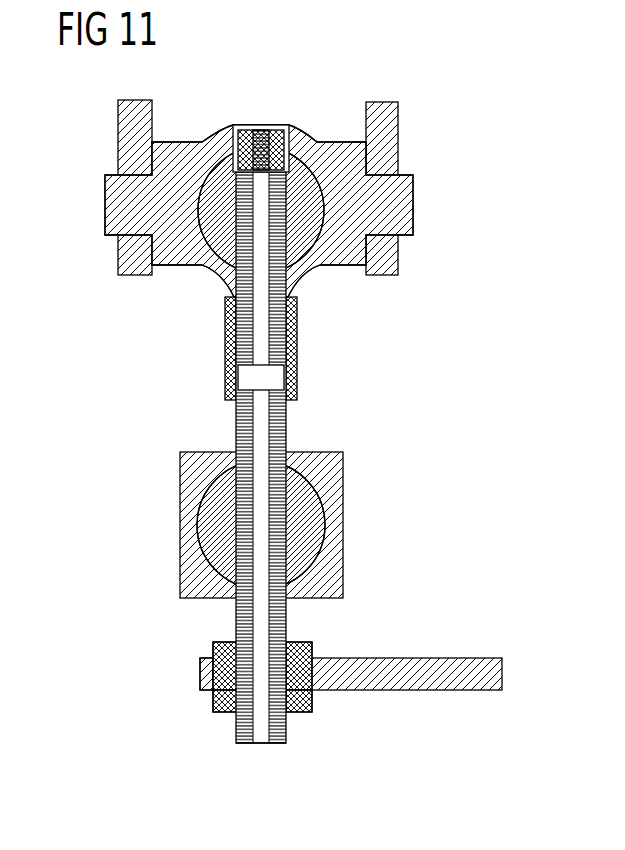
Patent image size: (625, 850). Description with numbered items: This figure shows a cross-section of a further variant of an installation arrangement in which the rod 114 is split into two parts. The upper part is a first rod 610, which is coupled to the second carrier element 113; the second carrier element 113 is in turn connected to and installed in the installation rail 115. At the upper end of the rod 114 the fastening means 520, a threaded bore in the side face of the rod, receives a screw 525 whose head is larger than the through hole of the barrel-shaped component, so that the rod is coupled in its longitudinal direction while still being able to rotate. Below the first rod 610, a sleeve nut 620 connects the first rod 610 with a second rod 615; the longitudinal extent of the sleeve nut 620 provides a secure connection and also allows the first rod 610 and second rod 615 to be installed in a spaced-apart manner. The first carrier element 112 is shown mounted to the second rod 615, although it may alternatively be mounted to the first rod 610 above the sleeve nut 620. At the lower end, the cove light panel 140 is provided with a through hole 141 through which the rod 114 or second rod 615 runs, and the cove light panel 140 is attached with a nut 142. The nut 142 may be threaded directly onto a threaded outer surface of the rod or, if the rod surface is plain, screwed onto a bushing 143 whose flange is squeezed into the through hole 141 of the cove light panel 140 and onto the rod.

The first carrier element 112 is at (360, 467).
The second carrier element 113 is at (352, 276).
The rod 114 is at (263, 758).
The installation rail 115 is at (118, 128).
The cove light panel 140 is at (447, 658).
The through hole 141 is at (300, 647).
The nut 142 is at (315, 706).
The bushing 143 is at (205, 658).
The fastening means 520 is at (287, 143).
The screw 525 is at (252, 125).
The first rod 610 is at (268, 340).
The second rod 615 is at (287, 421).
The sleeve nut 620 is at (224, 342).